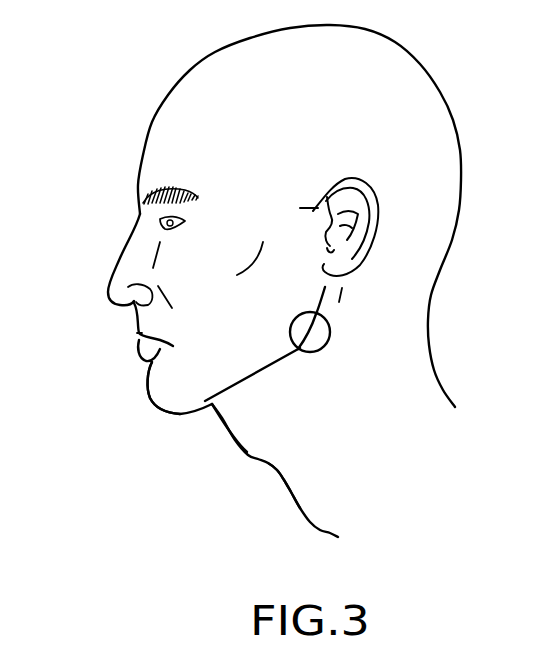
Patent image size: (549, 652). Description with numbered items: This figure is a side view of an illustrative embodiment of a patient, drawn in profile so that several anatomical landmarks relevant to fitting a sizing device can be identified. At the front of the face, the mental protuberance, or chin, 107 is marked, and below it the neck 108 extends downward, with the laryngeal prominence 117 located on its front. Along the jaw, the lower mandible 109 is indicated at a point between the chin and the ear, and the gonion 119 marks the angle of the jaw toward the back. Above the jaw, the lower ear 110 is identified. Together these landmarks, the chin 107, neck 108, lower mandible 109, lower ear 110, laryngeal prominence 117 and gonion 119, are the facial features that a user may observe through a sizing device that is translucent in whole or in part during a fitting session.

The mental protuberance 107 is at (139, 400).
The neck 108 is at (289, 482).
The lower mandible 109 is at (295, 356).
The lower ear 110 is at (338, 281).
The laryngeal prominence 117 is at (247, 449).
The gonion 119 is at (328, 342).